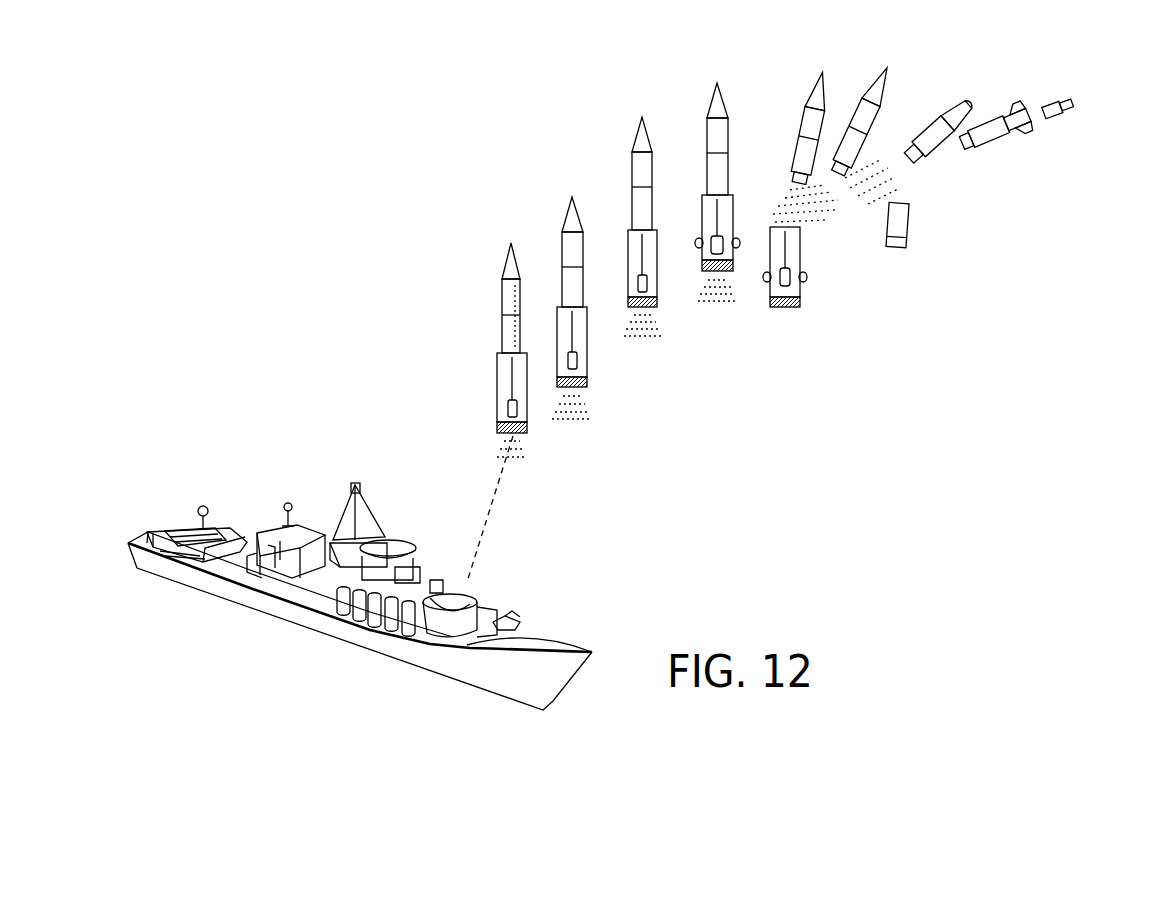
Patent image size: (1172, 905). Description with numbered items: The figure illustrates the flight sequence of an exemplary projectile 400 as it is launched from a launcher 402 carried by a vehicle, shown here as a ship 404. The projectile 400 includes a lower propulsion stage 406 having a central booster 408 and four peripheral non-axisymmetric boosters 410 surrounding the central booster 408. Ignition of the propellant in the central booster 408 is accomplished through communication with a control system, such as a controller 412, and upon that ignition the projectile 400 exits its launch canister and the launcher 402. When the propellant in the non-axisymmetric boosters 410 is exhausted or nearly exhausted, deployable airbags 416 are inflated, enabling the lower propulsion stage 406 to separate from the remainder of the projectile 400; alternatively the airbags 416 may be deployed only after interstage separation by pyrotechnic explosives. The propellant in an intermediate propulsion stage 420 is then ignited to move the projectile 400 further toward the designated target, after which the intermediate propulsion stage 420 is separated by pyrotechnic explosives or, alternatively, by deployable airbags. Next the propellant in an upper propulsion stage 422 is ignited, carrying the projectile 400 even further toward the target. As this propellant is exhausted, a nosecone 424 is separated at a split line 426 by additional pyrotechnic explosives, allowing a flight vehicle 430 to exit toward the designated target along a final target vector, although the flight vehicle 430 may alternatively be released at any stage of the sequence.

The projectile 400 is at (472, 319).
The launcher 402 is at (473, 590).
The ship 404 is at (547, 678).
The lower propulsion stage 406 is at (505, 385).
The central booster 408 is at (514, 434).
The non-axisymmetric boosters 410 is at (582, 387).
The controller 412 is at (510, 281).
The deployable airbags 416 is at (738, 243).
The intermediate propulsion stage 420 is at (840, 143).
The upper propulsion stage 422 is at (933, 143).
The nosecone 424 is at (957, 123).
The split line 426 is at (947, 117).
The flight vehicle 430 is at (1060, 118).